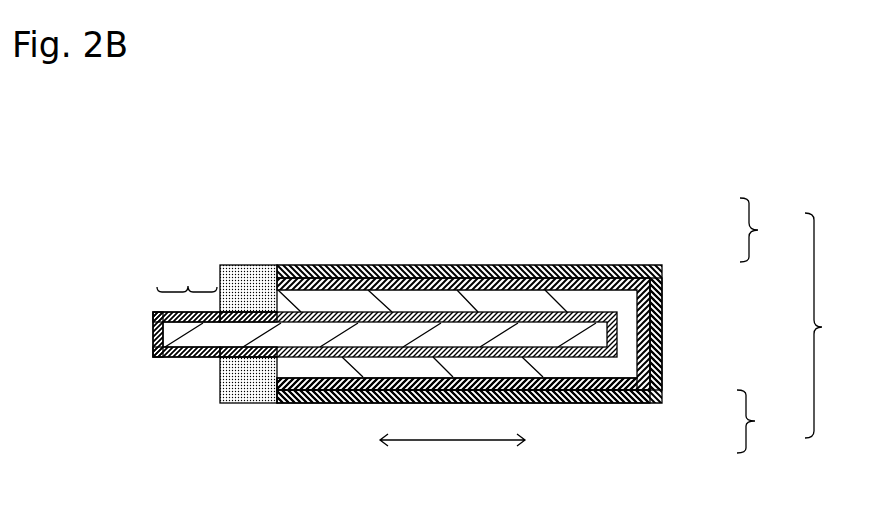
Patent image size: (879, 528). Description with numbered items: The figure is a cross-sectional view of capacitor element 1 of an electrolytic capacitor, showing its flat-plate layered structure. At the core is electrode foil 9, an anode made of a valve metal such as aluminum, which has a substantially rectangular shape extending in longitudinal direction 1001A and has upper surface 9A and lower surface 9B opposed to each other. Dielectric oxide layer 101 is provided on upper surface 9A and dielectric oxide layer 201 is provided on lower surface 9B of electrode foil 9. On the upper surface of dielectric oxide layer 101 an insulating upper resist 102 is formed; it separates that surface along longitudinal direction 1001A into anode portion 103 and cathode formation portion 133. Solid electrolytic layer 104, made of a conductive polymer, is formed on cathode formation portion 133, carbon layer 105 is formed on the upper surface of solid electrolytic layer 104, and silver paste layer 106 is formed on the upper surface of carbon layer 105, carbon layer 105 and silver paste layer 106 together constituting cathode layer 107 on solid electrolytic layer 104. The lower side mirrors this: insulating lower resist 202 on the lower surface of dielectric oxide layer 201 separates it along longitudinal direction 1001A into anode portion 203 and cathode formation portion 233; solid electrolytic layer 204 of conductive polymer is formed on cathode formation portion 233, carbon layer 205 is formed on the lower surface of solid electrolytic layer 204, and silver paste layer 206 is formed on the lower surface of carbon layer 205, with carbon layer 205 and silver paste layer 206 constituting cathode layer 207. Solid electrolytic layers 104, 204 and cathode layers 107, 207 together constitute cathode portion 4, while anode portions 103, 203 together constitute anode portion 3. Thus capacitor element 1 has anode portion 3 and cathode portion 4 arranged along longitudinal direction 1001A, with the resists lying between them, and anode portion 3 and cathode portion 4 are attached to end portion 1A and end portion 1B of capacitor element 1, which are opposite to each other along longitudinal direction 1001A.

The capacitor element 1 is at (648, 175).
The end portion 1A is at (153, 343).
The end portion 1B is at (663, 345).
The anode portion 3 is at (187, 273).
The cathode portion 4 is at (822, 325).
The electrode foil 9 is at (182, 333).
The upper surface 9A is at (178, 310).
The lower surface 9B is at (185, 357).
The dielectric oxide layer 101 is at (235, 317).
The upper resist 102 is at (250, 280).
The anode portion 103 is at (188, 310).
The solid electrolytic layer 104 is at (562, 301).
The carbon layer 105 is at (585, 283).
The silver paste layer 106 is at (578, 271).
The cathode layer 107 is at (769, 230).
The cathode formation portion 133 is at (453, 313).
The dielectric oxide layer 201 is at (198, 355).
The lower resist 202 is at (248, 391).
The anode portion 203 is at (207, 358).
The solid electrolytic layer 204 is at (570, 368).
The carbon layer 205 is at (632, 386).
The silver paste layer 206 is at (612, 397).
The cathode layer 207 is at (766, 421).
The cathode formation portion 233 is at (358, 357).
The longitudinal direction 1001A is at (428, 440).